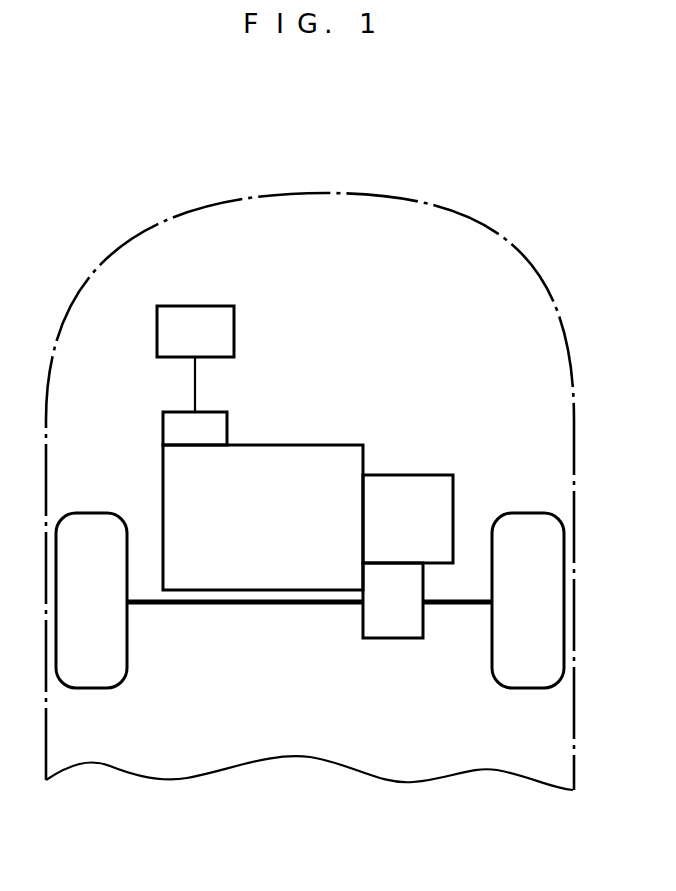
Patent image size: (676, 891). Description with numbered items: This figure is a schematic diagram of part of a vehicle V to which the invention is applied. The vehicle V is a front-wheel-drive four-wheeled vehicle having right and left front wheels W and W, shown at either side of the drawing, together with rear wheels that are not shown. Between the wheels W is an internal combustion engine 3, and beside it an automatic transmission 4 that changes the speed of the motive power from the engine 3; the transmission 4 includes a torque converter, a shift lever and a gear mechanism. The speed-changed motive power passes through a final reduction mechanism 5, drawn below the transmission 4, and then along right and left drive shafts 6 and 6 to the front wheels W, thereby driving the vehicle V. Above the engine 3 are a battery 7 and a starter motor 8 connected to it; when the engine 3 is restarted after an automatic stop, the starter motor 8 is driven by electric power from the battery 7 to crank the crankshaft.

The vehicle V is at (355, 193).
The wheels W is at (92, 513).
The internal combustion engine 3 is at (318, 445).
The automatic transmission 4 is at (408, 475).
The final reduction mechanism 5 is at (385, 640).
The drive shafts 6 is at (251, 606).
The battery 7 is at (234, 322).
The starter motor 8 is at (227, 426).